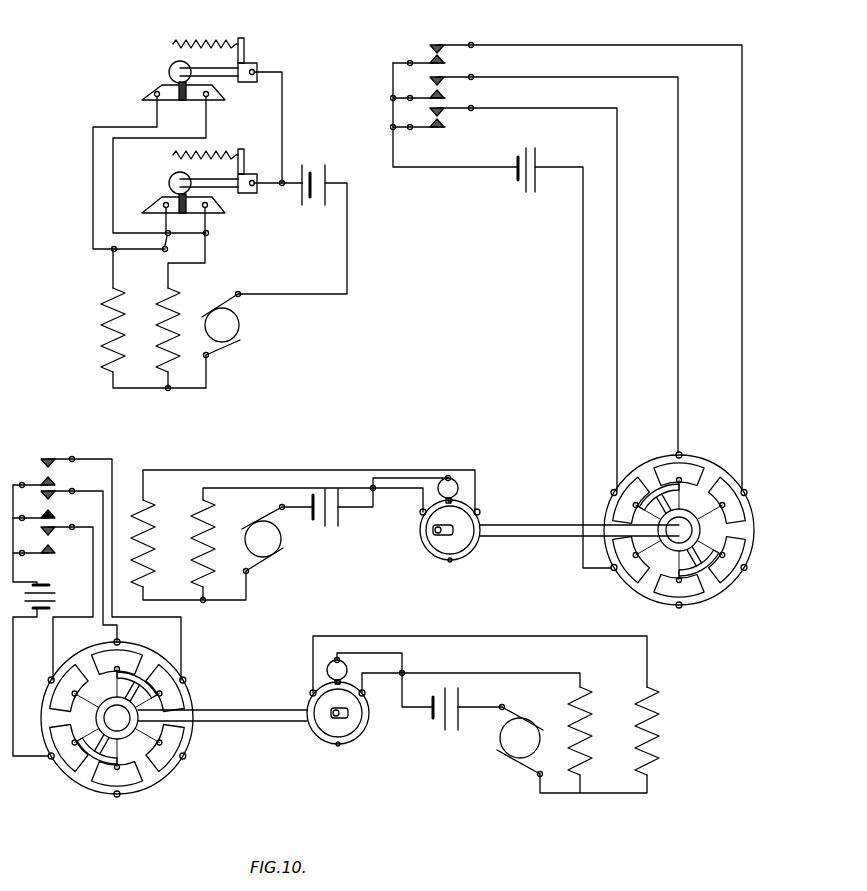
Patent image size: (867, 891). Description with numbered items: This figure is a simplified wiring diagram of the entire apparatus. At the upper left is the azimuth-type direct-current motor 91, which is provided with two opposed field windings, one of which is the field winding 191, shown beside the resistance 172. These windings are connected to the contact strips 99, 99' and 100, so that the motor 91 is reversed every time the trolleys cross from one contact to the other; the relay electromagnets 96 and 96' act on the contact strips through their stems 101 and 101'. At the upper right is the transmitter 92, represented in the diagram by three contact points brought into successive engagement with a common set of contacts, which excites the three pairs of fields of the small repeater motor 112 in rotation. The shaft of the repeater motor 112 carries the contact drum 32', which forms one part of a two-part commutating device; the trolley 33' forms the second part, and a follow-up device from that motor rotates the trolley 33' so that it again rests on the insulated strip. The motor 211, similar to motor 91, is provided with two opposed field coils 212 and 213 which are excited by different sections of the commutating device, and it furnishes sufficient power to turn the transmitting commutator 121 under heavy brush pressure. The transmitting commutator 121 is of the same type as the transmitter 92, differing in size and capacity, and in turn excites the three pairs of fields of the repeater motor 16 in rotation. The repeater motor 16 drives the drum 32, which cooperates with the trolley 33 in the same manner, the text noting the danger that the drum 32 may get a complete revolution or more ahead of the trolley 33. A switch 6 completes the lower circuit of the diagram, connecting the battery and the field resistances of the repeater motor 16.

The relay electromagnet 96 is at (203, 60).
The contact strip 99 is at (178, 83).
The contact strip 100 is at (216, 91).
The contact stem 101 is at (183, 102).
The relay electromagnet 96' is at (213, 171).
The contact strip 99' is at (180, 197).
The contact stem 101' is at (218, 216).
The field winding 191 is at (102, 330).
The resistance 172 is at (178, 300).
The motor 91 is at (240, 331).
The transmitter 92 is at (428, 45).
The repeater motor 112 is at (746, 510).
The transmitting commutator 121 is at (48, 458).
The field coil 212 is at (152, 530).
The field coil 213 is at (216, 520).
The motor 211 is at (264, 556).
The trolley 33' is at (459, 474).
The contact drum 32' is at (459, 536).
The repeater motor 16 is at (184, 733).
The trolley 33 is at (331, 663).
The drum 32 is at (348, 718).
The switch 6 is at (522, 755).